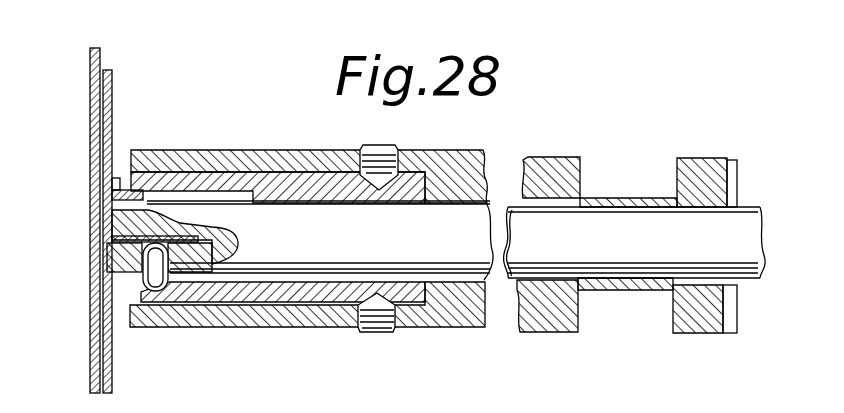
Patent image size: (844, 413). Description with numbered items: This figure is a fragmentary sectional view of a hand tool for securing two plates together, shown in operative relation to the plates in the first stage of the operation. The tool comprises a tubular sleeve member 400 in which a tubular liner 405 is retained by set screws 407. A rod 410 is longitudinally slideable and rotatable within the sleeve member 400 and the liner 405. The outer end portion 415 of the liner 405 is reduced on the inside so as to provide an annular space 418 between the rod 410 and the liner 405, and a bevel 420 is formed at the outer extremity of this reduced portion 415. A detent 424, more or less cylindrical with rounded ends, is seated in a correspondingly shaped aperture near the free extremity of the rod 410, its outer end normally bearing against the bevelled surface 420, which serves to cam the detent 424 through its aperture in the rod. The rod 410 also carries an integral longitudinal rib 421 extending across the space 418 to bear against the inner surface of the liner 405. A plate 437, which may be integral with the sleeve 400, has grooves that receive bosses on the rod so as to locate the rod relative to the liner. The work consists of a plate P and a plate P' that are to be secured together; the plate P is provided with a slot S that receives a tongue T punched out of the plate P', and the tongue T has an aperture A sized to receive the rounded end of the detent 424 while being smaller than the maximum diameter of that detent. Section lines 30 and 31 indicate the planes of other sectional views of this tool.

The plate P is at (160, 202).
The plate P' is at (74, 204).
The section line 30 is at (119, 140).
The section line 31 is at (158, 186).
The outer end portion of liner 415 is at (208, 172).
The annular space 418 is at (240, 197).
The detent 424 is at (160, 263).
The bevel 420 is at (177, 283).
The tubular liner 405 is at (293, 290).
The set screws 407 is at (385, 146).
The longitudinal rib 421 is at (113, 178).
The tongue T is at (222, 224).
The slot S is at (157, 240).
The aperture A is at (143, 243).
The tubular sleeve member 400 is at (553, 172).
The plate 437 is at (700, 172).
The rod 410 is at (606, 228).